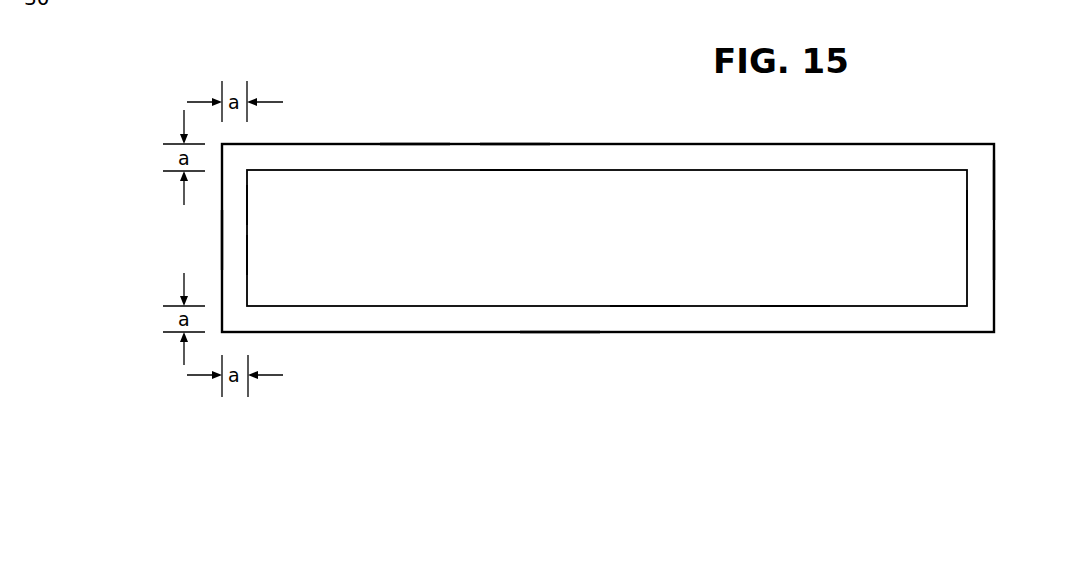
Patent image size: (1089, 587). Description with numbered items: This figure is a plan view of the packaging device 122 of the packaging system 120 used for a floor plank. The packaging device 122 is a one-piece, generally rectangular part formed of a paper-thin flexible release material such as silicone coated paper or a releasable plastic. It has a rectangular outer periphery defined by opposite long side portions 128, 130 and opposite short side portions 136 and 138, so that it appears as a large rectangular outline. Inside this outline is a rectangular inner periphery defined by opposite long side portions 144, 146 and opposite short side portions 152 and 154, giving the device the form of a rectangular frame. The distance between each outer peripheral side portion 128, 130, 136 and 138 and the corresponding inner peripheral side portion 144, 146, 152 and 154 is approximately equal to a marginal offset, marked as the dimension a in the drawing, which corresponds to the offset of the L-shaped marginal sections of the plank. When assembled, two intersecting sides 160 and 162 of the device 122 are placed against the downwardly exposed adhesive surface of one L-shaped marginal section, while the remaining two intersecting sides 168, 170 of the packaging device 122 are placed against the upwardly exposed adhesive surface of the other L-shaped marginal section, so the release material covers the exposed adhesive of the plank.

The packaging system 120 is at (586, 122).
The packaging device 122 is at (413, 139).
The long side portion 128 is at (515, 143).
The long side portion 130 is at (558, 332).
The short side portion 136 is at (220, 238).
The short side portion 138 is at (995, 187).
The long side portion 144 is at (513, 170).
The long side portion 146 is at (643, 305).
The short side portion 152 is at (248, 252).
The short side portion 154 is at (967, 217).
The intersecting side 160 is at (596, 162).
The intersecting side 162 is at (987, 250).
The intersecting side 168 is at (792, 315).
The intersecting side 170 is at (237, 205).